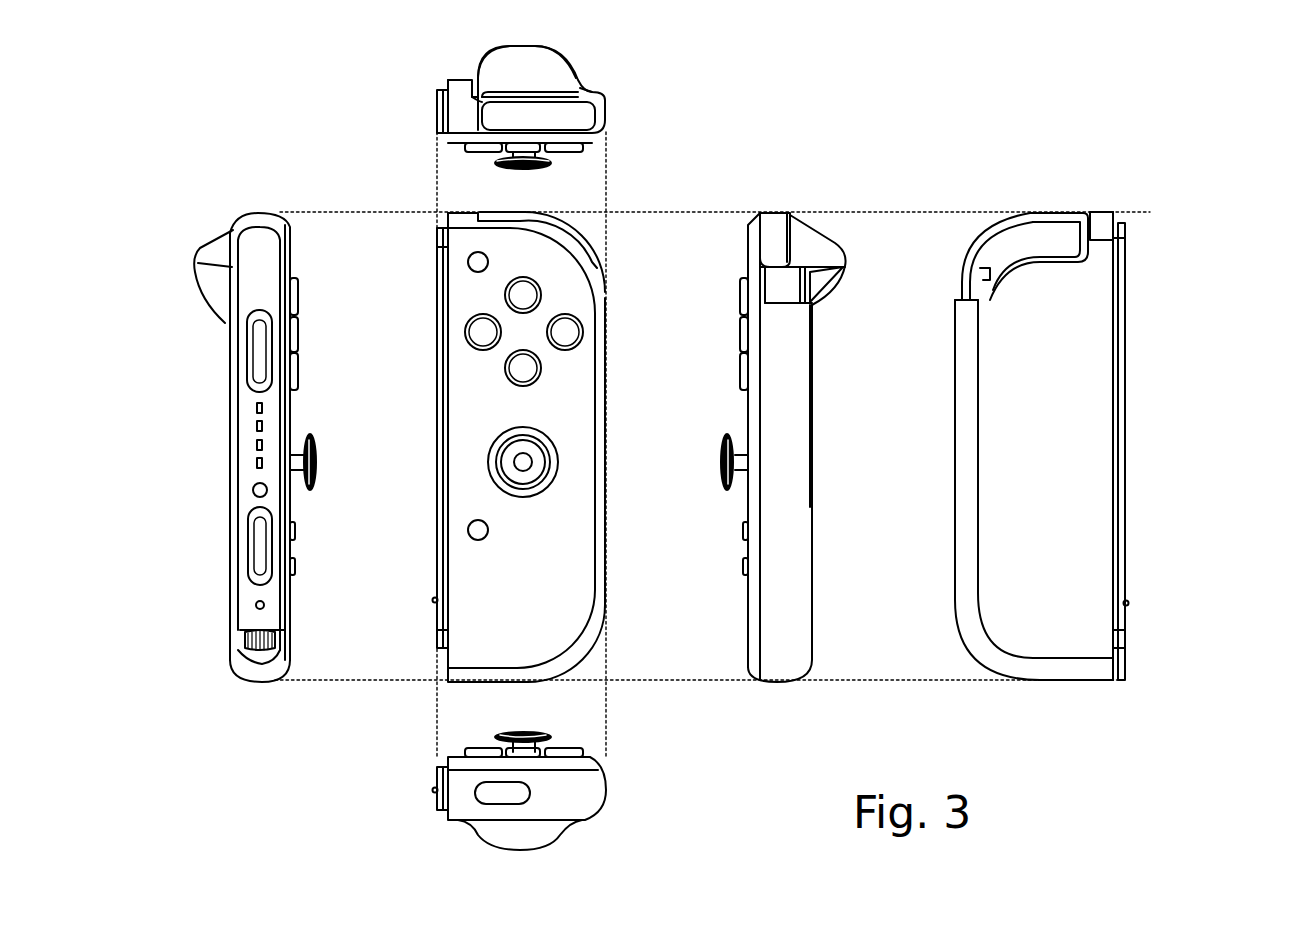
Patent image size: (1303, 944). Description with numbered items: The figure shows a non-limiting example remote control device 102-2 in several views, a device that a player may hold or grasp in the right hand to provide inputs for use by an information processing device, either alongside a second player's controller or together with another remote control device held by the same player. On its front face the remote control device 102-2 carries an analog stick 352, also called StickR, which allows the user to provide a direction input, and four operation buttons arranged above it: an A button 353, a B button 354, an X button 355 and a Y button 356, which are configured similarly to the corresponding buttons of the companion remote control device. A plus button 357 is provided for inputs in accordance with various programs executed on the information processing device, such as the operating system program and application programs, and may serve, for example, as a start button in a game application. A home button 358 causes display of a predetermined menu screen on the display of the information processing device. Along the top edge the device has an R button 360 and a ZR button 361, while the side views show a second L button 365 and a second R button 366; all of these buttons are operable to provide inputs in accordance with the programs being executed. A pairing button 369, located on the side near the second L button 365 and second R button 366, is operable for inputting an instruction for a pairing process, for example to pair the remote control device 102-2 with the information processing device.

The remote control device 102-2 is at (1140, 117).
The analog stick 352 is at (721, 462).
The A button 353 is at (570, 328).
The B button 354 is at (533, 373).
The X button 355 is at (530, 290).
The Y button 356 is at (478, 331).
The plus button 357 is at (468, 264).
The home button 358 is at (468, 532).
The R button 360 is at (770, 222).
The ZR button 361 is at (555, 72).
The second L (SL-2) button 365 is at (260, 545).
The second R (SR-2) button 366 is at (258, 353).
The pairing button 369 is at (255, 491).